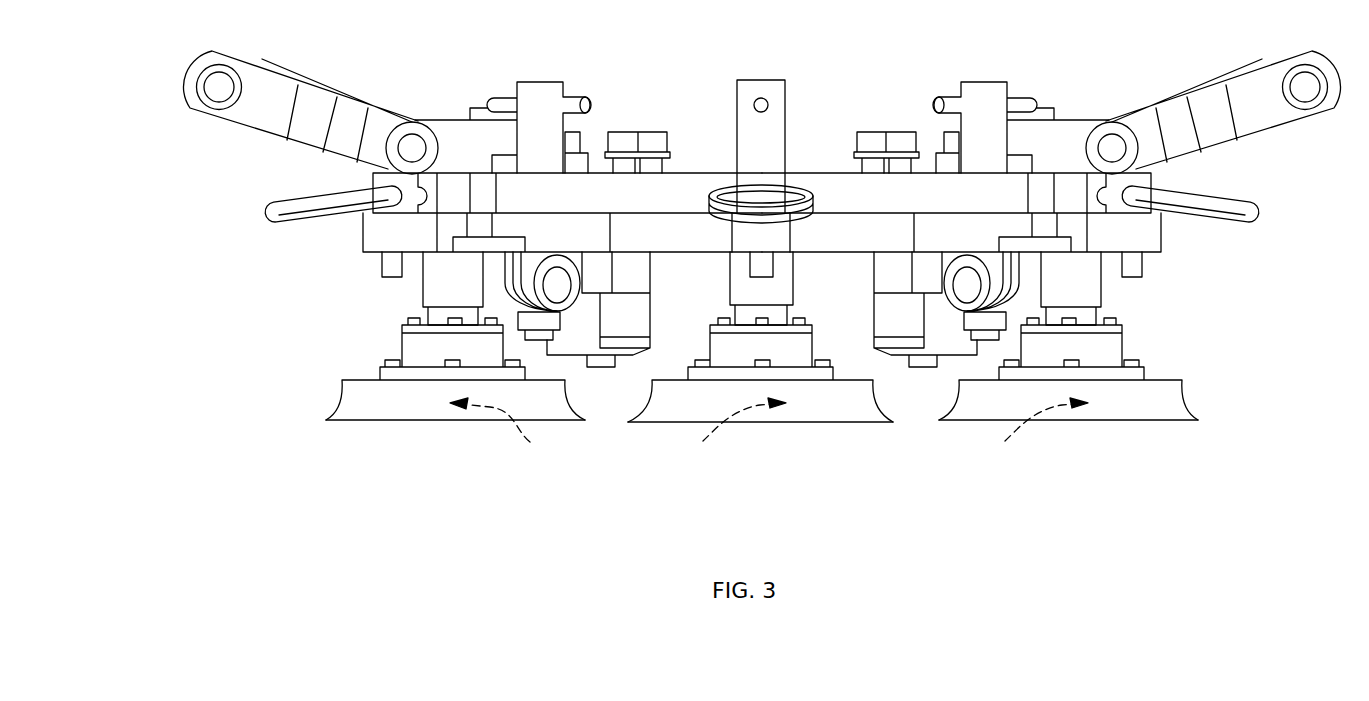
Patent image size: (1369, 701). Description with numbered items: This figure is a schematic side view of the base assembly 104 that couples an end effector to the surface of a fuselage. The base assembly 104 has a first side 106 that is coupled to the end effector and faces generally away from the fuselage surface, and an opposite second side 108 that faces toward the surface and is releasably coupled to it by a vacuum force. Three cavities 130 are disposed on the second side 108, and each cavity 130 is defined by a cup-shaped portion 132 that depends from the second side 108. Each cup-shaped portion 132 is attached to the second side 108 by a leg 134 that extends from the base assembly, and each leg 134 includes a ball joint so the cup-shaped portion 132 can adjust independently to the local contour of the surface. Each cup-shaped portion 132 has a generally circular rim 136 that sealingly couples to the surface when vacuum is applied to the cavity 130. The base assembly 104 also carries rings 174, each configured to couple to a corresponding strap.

The base assembly 104 is at (178, 161).
The first side 106 is at (700, 173).
The second side 108 is at (722, 253).
The cavity 130 is at (769, 426).
The cup-shaped portion 132 is at (346, 401).
The leg 134 is at (430, 300).
The circular rim 136 is at (383, 421).
The ring 174 is at (270, 211).